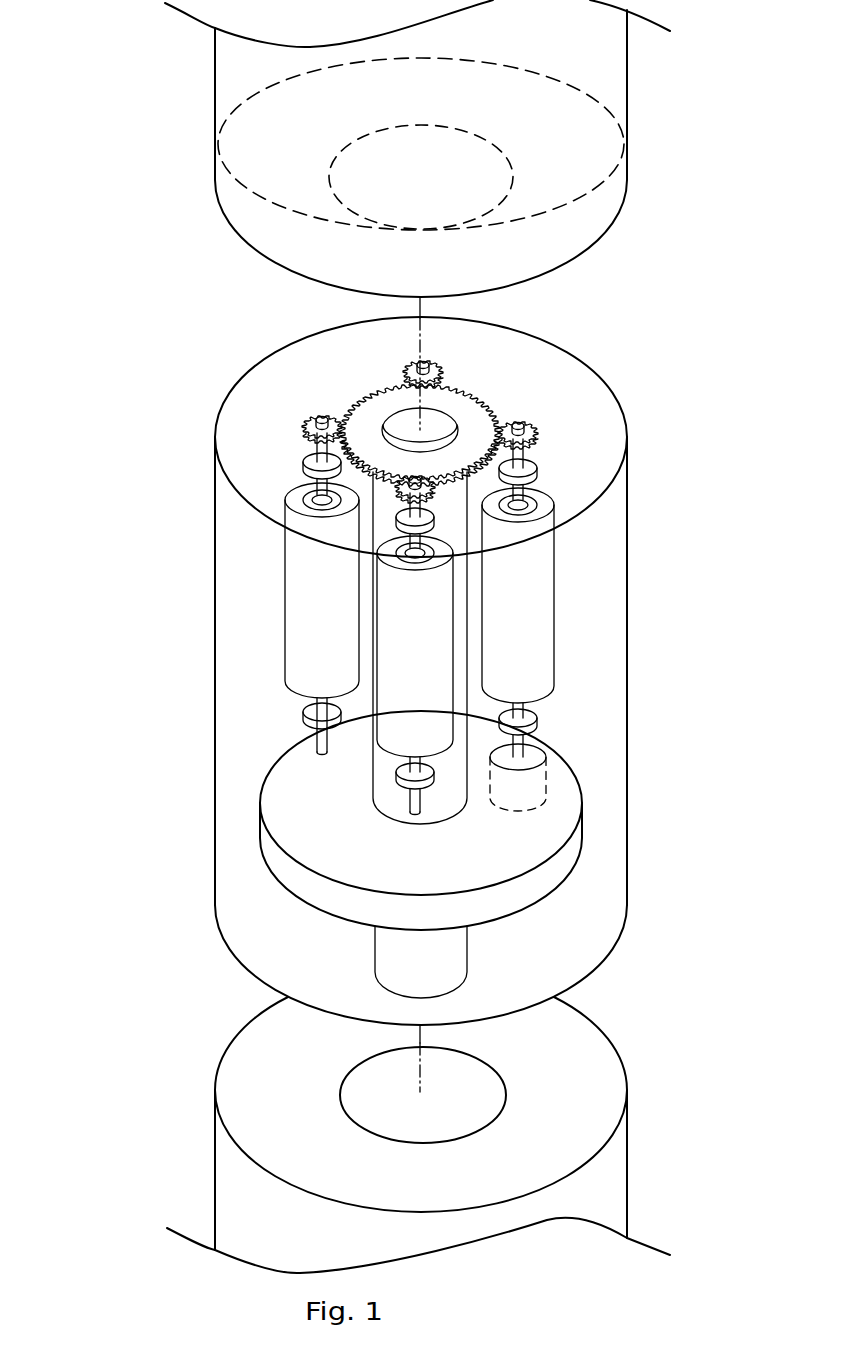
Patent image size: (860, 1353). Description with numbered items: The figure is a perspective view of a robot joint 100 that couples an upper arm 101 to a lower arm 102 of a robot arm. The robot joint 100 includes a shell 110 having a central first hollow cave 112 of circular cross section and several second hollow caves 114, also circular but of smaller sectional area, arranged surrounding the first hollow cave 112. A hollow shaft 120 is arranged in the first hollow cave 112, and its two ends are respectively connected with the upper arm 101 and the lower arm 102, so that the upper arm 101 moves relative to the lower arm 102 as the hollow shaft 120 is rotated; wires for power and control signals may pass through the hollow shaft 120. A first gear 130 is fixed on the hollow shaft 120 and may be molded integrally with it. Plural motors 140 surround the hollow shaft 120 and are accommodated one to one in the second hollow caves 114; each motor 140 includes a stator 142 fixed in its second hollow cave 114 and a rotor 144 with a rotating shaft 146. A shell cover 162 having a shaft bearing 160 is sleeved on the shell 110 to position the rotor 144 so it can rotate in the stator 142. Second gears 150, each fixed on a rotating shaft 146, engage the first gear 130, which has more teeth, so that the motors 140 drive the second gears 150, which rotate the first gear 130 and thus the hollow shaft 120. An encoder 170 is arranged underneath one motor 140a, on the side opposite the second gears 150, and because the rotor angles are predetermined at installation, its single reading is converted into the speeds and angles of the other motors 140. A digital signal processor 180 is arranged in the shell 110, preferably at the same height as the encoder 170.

The robot joint 100 is at (207, 303).
The upper arm 101 is at (613, 80).
The lower arm 102 is at (613, 1182).
The shell 110 is at (627, 602).
The first hollow cave 112 is at (468, 673).
The second hollow cave 114 is at (276, 662).
The hollow shaft 120 is at (456, 640).
The first gear 130 is at (472, 412).
The motor 140 is at (105, 553).
The motor 140a is at (545, 558).
The stator 142 is at (327, 512).
The rotor 144 is at (312, 502).
The rotating shaft 146 is at (300, 482).
The second gear 150 is at (303, 432).
The shaft bearing 160 is at (545, 468).
The shell cover 162 is at (223, 510).
The encoder 170 is at (537, 785).
The digital signal processor 180 is at (563, 855).